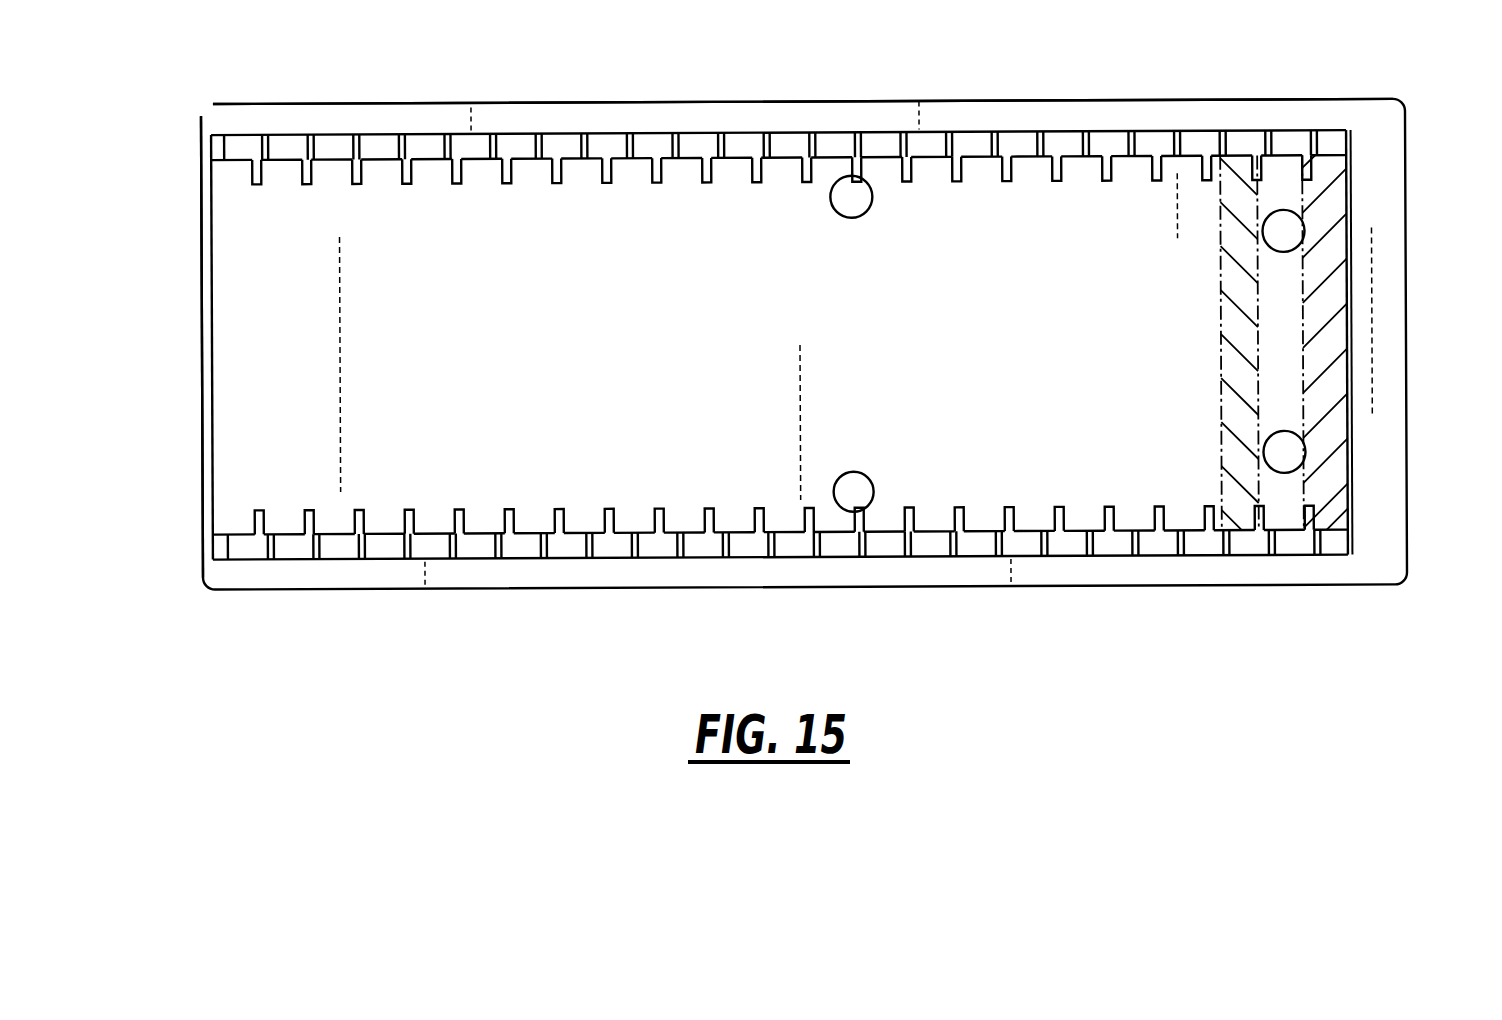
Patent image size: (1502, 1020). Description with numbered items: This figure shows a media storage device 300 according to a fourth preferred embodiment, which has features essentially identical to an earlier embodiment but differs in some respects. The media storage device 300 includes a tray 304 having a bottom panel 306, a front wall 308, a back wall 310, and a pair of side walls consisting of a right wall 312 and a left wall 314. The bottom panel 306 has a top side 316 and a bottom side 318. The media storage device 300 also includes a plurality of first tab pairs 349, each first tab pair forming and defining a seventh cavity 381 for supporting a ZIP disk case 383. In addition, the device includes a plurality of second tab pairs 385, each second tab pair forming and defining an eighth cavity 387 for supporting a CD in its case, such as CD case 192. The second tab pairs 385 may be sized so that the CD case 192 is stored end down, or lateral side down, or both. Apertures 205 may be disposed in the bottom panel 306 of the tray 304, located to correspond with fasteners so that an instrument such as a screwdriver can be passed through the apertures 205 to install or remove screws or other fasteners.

The CD case 192 is at (1240, 409).
The apertures 205 is at (863, 190).
The media storage device 300 is at (1082, 48).
The tray 304 is at (1121, 114).
The bottom panel 306 is at (385, 232).
The front wall 308 is at (1396, 231).
The back wall 310 is at (201, 362).
The right wall 312 is at (802, 115).
The left wall 314 is at (802, 578).
The top side 316 is at (527, 205).
The bottom side 318 is at (701, 245).
The first tab pairs 349 is at (958, 167).
The seventh cavity 381 is at (1337, 201).
The ZIP disk case 383 is at (1335, 357).
The second tab pairs 385 is at (590, 147).
The eighth cavity 387 is at (1240, 286).